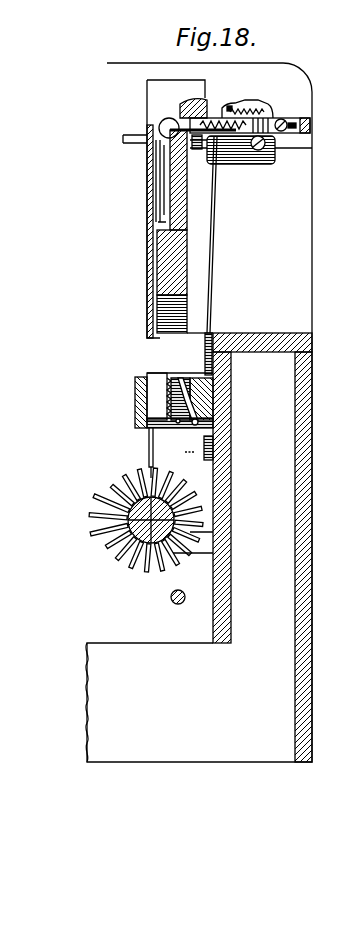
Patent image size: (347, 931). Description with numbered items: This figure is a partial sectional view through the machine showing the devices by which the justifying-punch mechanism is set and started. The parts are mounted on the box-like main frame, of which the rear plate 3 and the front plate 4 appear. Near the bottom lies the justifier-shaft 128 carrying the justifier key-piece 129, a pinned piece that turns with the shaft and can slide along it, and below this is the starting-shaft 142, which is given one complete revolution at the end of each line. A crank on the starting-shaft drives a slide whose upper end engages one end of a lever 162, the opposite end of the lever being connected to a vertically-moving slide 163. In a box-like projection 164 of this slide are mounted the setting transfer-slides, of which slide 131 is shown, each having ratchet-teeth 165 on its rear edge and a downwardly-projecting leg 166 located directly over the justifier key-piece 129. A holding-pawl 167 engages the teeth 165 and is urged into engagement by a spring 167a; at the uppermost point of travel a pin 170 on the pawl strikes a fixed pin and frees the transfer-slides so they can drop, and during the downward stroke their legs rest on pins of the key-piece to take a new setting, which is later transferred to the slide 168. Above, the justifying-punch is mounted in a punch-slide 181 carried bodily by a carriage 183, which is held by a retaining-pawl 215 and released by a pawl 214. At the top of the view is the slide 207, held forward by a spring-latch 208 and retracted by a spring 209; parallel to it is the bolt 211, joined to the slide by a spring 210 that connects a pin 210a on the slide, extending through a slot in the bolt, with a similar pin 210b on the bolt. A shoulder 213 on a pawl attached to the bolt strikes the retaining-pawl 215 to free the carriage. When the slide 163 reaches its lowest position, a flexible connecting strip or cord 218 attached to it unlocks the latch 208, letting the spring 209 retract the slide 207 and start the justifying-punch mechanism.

The rear plate 3 is at (302, 581).
The front plate 4 is at (232, 590).
The justifier-shaft 128 is at (114, 547).
The justifier key-piece 129 is at (126, 520).
The setting transfer-slide 131 is at (153, 390).
The starting-shaft 142 is at (172, 600).
The lever 162 is at (216, 462).
The vertically-moving slide 163 is at (217, 489).
The box-like projection 164 is at (140, 408).
The ratchet-teeth 165 is at (188, 363).
The downwardly-projecting leg 166 is at (148, 443).
The holding-pawl 167 is at (181, 403).
The spring 167a is at (204, 446).
The slide 168 is at (157, 313).
The pin 170 is at (200, 423).
The punch-slide 181 is at (114, 146).
The carriage 183 is at (149, 154).
The slide 207 is at (284, 118).
The spring-latch 208 is at (240, 150).
The spring 209 is at (240, 107).
The spring 210 is at (211, 118).
The pin 210a is at (207, 103).
The pin 210b is at (254, 112).
The bolt 211 is at (292, 132).
The shoulder 213 is at (165, 140).
The pawl 214 is at (166, 121).
The retaining-pawl 215 is at (197, 152).
The flexible connecting strip or cord 218 is at (213, 263).